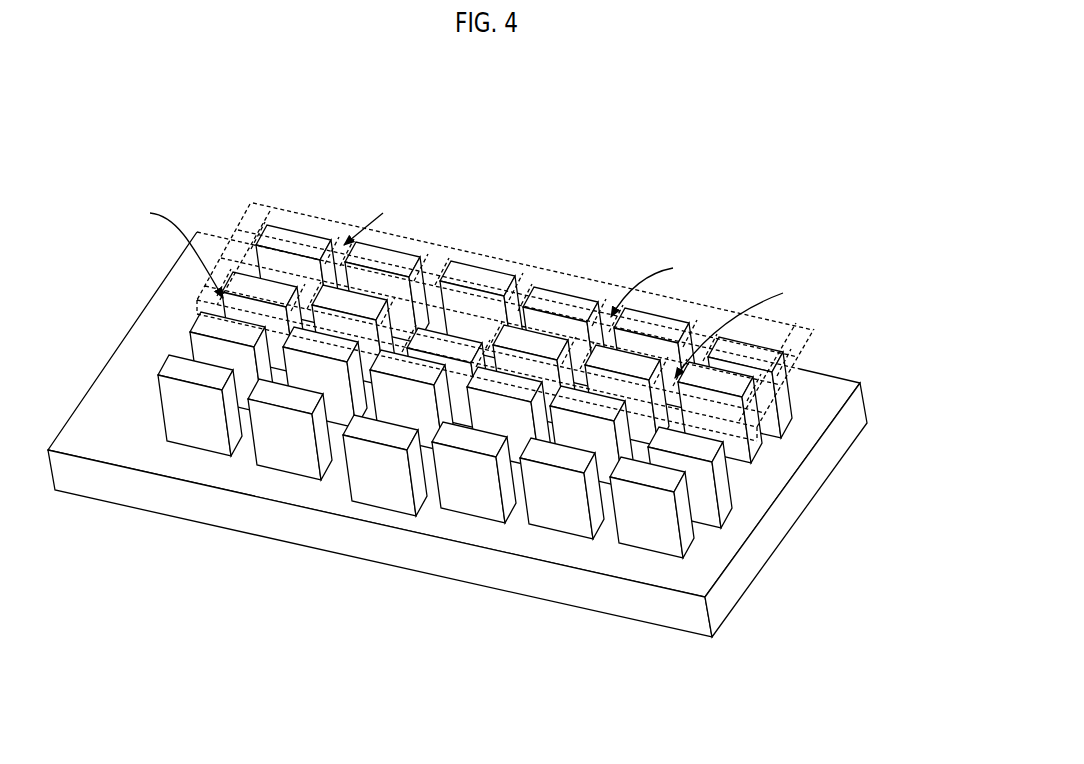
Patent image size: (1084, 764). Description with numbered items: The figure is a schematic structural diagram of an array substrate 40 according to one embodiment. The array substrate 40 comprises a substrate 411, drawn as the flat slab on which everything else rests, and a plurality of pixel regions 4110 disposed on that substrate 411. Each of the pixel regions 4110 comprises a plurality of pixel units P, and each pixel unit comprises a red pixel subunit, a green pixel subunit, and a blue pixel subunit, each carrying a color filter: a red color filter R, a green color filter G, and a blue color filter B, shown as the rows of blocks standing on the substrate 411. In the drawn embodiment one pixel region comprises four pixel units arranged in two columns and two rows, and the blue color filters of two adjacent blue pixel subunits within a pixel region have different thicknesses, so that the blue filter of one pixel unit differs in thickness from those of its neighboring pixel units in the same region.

The array substrate 40 is at (532, 122).
The substrate 411 is at (822, 463).
The pixel regions 4110 is at (530, 281).